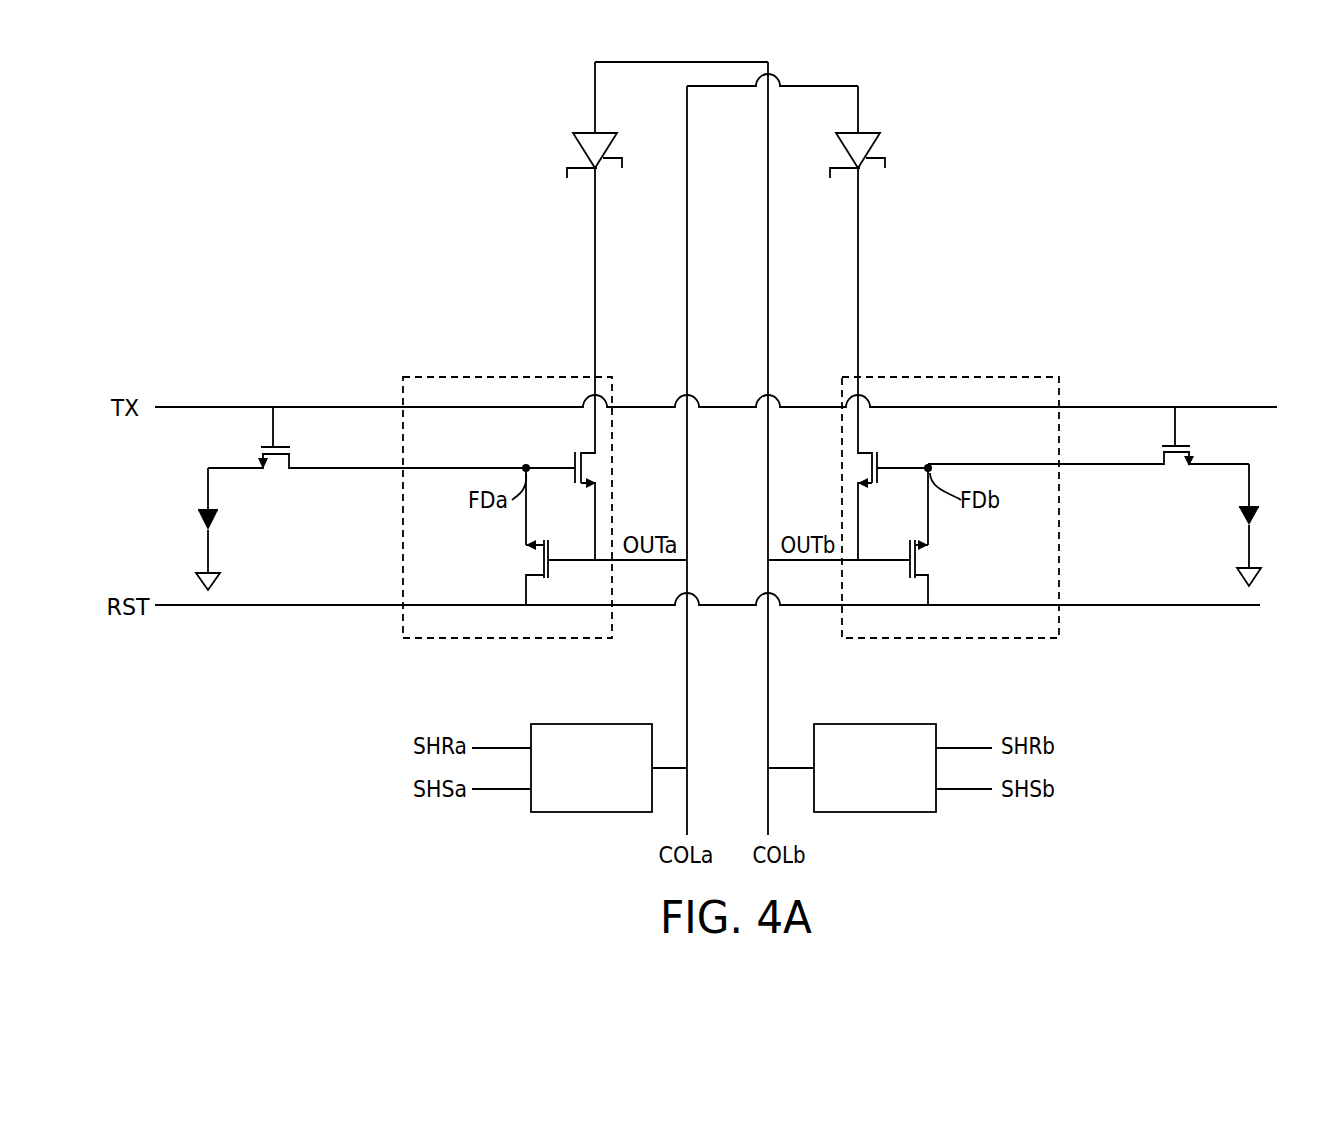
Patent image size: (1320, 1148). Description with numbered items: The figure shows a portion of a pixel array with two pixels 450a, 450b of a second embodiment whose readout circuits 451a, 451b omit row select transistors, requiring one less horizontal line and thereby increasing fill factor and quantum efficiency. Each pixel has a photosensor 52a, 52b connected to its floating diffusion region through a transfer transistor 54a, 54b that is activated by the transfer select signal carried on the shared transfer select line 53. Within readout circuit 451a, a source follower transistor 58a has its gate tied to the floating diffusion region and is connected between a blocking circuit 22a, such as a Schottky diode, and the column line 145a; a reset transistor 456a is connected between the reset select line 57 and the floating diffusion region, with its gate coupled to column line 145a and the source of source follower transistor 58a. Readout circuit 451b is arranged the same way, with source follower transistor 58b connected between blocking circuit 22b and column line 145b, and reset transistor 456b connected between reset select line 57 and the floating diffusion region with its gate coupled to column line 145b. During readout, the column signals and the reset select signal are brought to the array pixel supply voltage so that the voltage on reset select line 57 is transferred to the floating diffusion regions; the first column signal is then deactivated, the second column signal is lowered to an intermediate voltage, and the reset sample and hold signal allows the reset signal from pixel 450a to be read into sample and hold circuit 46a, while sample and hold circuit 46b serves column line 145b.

The blocking circuit 22a is at (583, 128).
The blocking circuit 22b is at (867, 128).
The column line 145a is at (687, 250).
The column line 145b is at (767, 133).
The pixel 450a is at (212, 272).
The pixel 450b is at (1201, 262).
The transfer select line 53 is at (250, 406).
The reset select line 57 is at (248, 606).
The readout circuit 451a is at (462, 376).
The readout circuit 451b is at (965, 376).
The transfer transistor 54a is at (262, 447).
The transfer transistor 54b is at (1192, 447).
The photosensor 52a is at (203, 510).
The photosensor 52b is at (1250, 507).
The source follower transistor 58a is at (586, 446).
The source follower transistor 58b is at (868, 446).
The reset transistor 456a is at (524, 565).
The reset transistor 456b is at (932, 565).
The sample and hold circuit 46a is at (573, 779).
The sample and hold circuit 46b is at (856, 779).